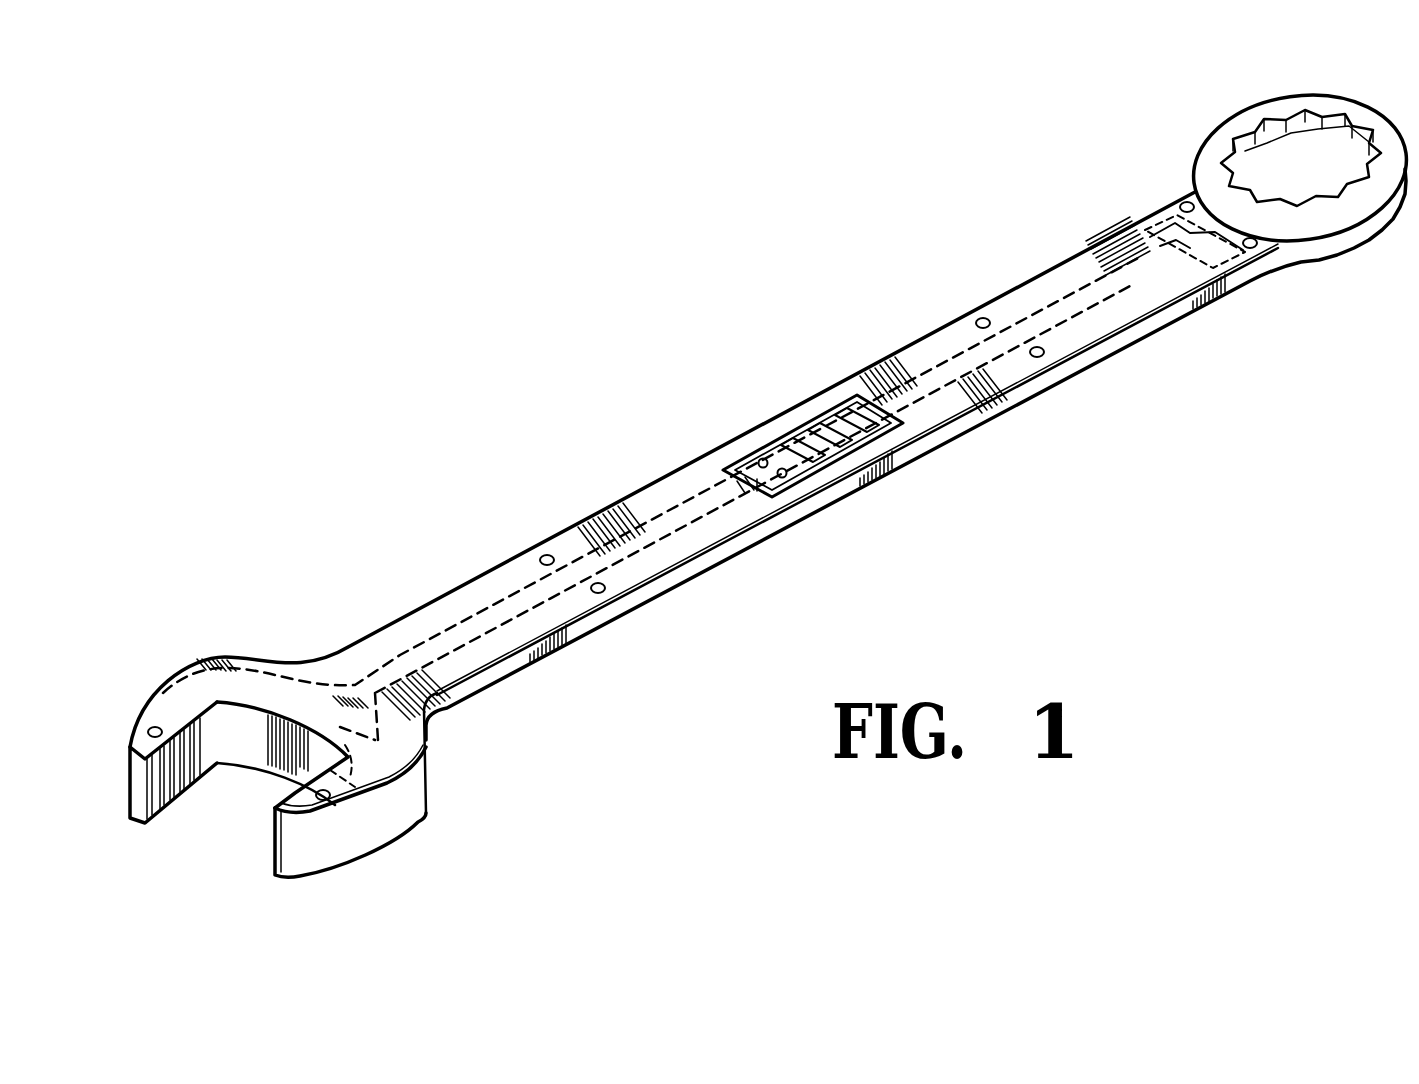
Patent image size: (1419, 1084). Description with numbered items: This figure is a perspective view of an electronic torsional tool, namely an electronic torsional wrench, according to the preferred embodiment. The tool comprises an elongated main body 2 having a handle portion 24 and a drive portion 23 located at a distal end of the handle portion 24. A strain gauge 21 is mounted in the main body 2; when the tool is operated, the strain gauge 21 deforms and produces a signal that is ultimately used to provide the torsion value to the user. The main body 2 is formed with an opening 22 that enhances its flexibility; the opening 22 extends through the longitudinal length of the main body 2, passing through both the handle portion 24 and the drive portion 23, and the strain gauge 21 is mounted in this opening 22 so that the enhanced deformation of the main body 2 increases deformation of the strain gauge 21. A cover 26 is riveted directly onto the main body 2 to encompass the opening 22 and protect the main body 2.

The main body 2 is at (528, 516).
The strain gauge 21 is at (192, 707).
The opening 22 is at (355, 712).
The drive portion 23 is at (250, 662).
The handle portion 24 is at (663, 590).
The cover 26 is at (1068, 337).